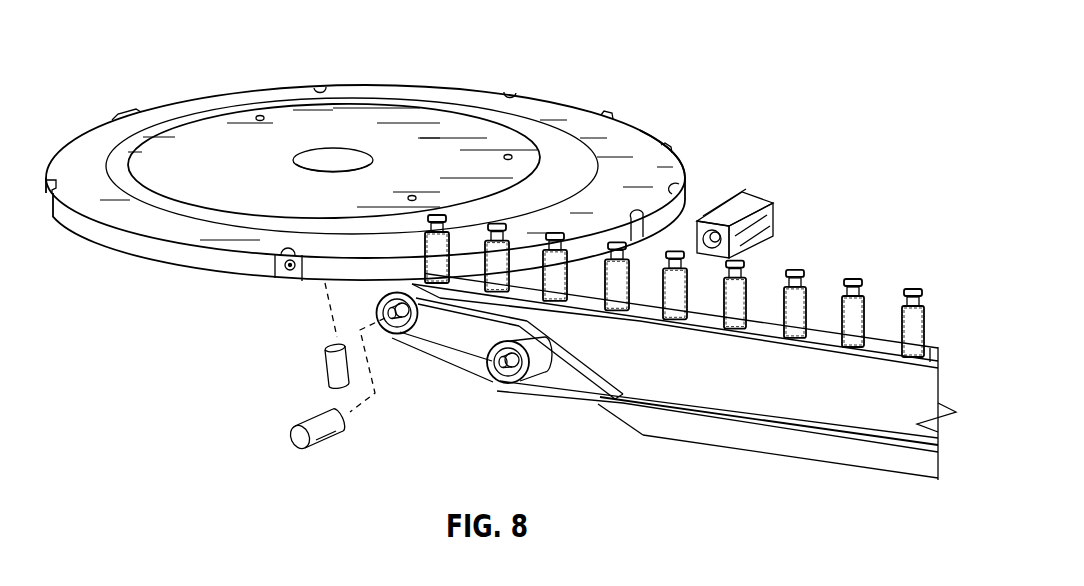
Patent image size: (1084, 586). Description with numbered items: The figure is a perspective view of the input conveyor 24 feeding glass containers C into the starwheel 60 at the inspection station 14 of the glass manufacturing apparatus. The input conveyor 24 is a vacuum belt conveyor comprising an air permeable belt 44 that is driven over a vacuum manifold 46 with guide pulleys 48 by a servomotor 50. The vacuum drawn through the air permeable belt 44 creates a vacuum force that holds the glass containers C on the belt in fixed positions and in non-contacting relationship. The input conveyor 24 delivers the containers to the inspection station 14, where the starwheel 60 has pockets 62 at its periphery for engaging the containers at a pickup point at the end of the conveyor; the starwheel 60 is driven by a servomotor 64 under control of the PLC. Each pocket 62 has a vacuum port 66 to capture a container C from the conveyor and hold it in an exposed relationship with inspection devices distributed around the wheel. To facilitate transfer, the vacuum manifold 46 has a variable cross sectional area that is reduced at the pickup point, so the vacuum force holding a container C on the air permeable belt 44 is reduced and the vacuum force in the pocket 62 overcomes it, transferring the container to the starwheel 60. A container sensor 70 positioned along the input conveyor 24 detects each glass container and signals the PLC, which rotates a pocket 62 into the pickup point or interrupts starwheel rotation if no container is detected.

The inspection station 14 is at (186, 55).
The input conveyor 24 is at (815, 326).
The air permeable belt 44 is at (554, 398).
The vacuum manifold 46 is at (838, 395).
The guide pulleys 48 is at (390, 342).
The servomotor 50 is at (292, 434).
The starwheel 60 is at (343, 88).
The pockets 62 is at (684, 148).
The servomotor 64 is at (330, 378).
The vacuum port 66 is at (290, 272).
The container sensor 70 is at (772, 220).
The glass containers C is at (918, 296).